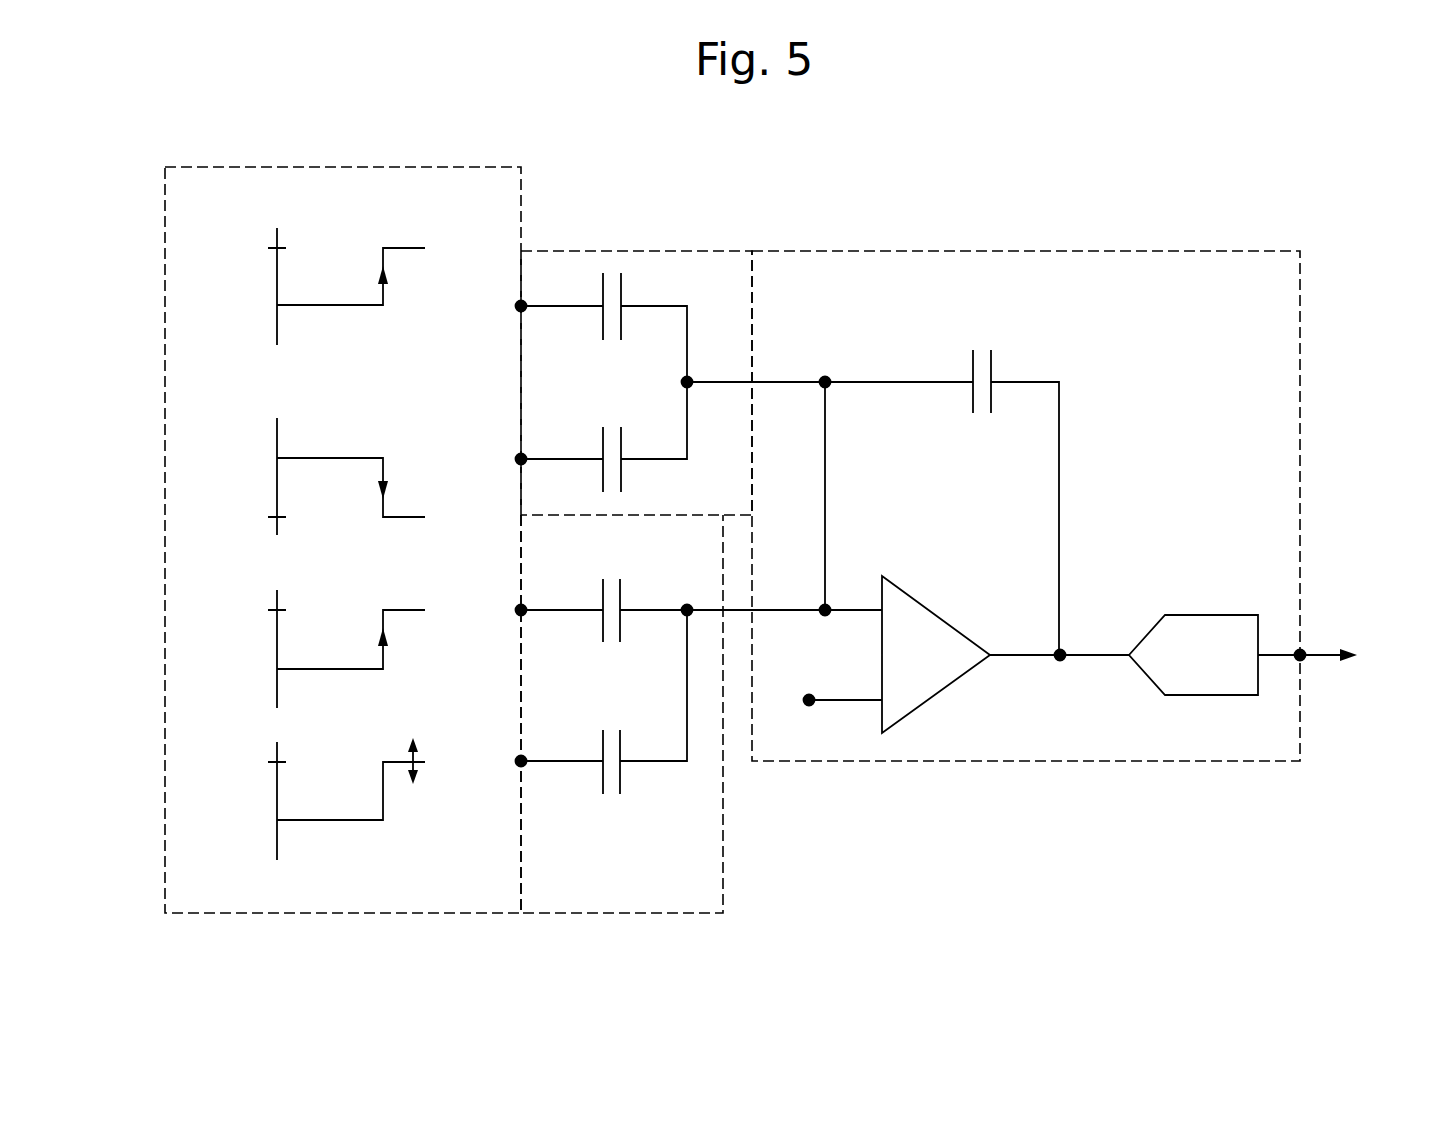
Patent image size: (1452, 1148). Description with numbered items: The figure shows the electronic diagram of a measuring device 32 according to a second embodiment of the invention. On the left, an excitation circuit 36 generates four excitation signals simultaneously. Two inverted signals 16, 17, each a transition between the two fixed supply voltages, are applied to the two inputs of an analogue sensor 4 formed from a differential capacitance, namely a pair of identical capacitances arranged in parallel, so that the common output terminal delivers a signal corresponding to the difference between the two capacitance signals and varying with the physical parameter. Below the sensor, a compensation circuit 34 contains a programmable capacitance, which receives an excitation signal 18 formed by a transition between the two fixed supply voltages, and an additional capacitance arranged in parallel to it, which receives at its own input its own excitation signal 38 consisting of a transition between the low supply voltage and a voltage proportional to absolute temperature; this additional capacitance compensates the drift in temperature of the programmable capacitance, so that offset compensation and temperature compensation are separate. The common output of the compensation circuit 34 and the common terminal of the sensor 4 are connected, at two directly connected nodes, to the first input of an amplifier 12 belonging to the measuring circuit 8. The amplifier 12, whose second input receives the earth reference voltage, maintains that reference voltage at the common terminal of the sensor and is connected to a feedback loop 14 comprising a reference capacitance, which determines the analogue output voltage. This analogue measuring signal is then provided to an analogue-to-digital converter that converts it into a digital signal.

The analogue sensor 4 is at (662, 251).
The measuring circuit 8 is at (978, 251).
The amplifier 12 is at (920, 682).
The feedback loop 14 is at (1072, 447).
The excitation signal 16 is at (367, 268).
The excitation signal 17 is at (400, 478).
The excitation signal 18 is at (368, 633).
The measuring device 32 is at (916, 138).
The compensation circuit 34 is at (723, 859).
The excitation circuit 36 is at (387, 165).
The excitation signal 38 is at (396, 807).